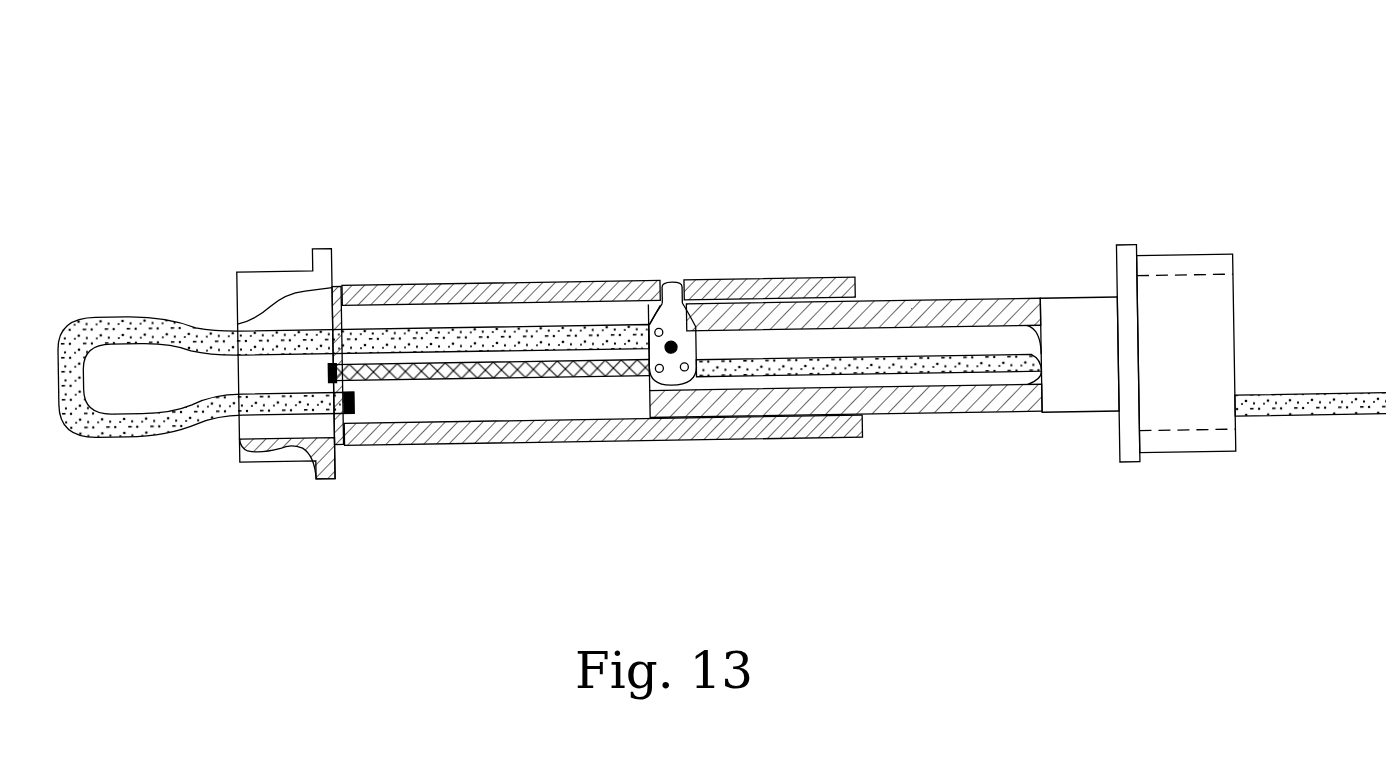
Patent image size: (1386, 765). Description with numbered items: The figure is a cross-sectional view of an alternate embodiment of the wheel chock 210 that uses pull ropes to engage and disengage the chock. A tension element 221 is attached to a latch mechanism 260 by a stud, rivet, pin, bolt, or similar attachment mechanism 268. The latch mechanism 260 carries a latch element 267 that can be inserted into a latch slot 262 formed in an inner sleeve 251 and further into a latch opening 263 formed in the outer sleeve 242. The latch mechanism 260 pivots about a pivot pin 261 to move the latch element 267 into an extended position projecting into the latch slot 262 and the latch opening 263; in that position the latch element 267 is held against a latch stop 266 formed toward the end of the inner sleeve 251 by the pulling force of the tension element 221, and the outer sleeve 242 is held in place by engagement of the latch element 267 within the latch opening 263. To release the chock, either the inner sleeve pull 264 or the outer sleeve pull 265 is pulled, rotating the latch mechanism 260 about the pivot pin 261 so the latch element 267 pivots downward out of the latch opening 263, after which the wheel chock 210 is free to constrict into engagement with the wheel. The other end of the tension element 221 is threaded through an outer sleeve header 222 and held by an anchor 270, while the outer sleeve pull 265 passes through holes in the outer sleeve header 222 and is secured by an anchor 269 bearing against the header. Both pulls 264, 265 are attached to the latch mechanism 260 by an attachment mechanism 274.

The wheel chock 210 is at (895, 106).
The tension element 221 is at (480, 382).
The outer sleeve header 222 is at (337, 369).
The outer sleeve 242 is at (418, 286).
The inner sleeve 251 is at (1068, 311).
The latch mechanism 260 is at (667, 392).
The pivot pin 261 is at (760, 289).
The latch slot 262 is at (656, 329).
The latch opening 263 is at (659, 287).
The inner sleeve pull 264 is at (995, 377).
The outer sleeve pull 265 is at (455, 328).
The latch stop 266 is at (676, 348).
The latch element 267 is at (675, 293).
The attachment mechanism 268 is at (648, 381).
The anchor 269 is at (350, 410).
The anchor 270 is at (330, 372).
The attachment mechanism 274 is at (654, 334).